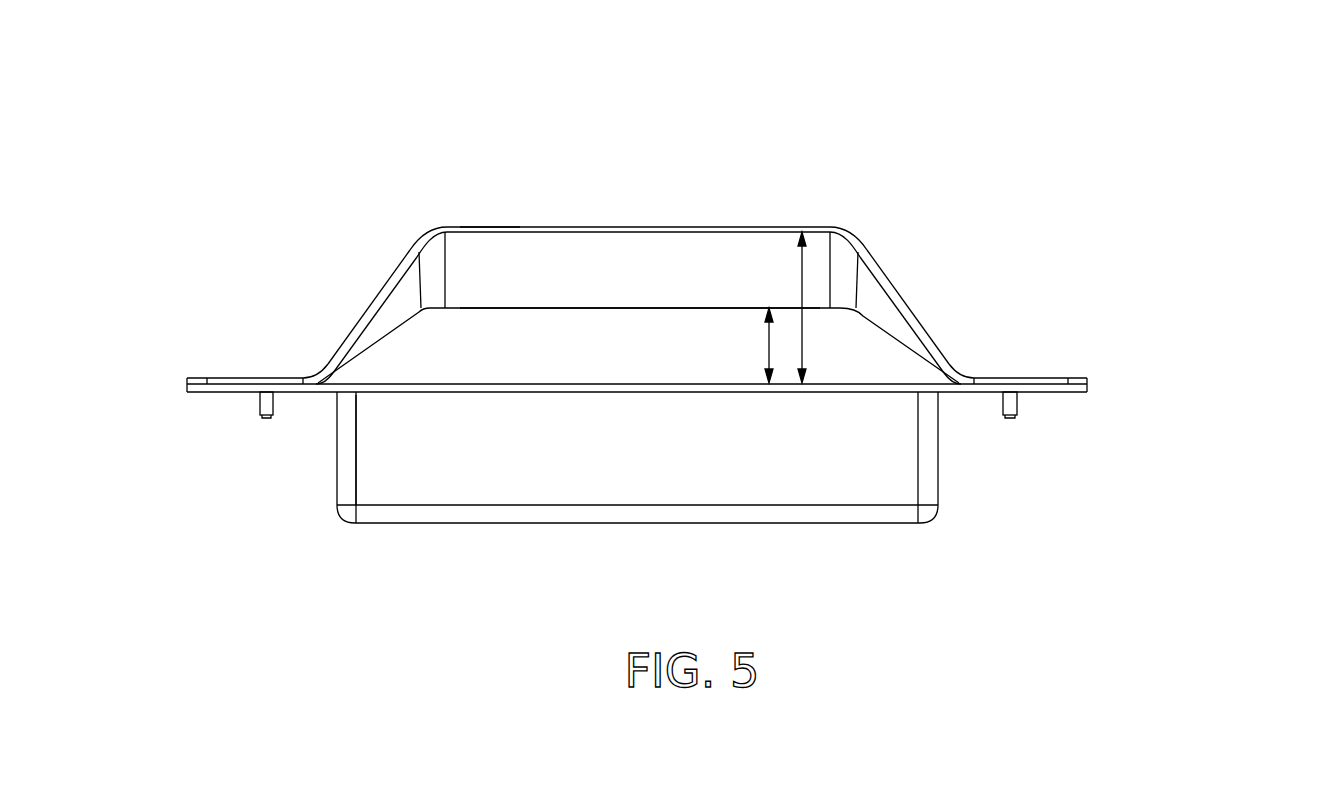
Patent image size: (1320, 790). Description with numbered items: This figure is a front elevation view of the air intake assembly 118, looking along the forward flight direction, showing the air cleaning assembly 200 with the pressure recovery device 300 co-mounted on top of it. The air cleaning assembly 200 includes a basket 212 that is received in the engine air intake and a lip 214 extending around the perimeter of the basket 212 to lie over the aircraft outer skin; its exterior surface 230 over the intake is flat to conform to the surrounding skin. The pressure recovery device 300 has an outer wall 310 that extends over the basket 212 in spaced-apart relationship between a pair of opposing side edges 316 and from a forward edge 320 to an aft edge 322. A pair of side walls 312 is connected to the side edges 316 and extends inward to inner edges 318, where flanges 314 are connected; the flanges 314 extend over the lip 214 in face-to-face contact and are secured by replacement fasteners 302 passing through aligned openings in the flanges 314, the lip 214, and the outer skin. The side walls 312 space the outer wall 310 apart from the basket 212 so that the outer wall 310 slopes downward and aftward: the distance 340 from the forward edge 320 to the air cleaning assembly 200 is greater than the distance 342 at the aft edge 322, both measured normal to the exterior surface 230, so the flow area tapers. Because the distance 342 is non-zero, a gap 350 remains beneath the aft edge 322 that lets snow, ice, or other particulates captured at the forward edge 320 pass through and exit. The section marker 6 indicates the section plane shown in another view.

The air intake assembly 118 is at (276, 145).
The air cleaning assembly 200 is at (1168, 383).
The basket 212 is at (940, 493).
The lip 214 is at (220, 392).
The exterior surface 230 is at (648, 383).
The pressure recovery device 300 is at (1168, 223).
The replacement fasteners 302 is at (268, 418).
The outer wall 310 is at (623, 227).
The side walls 312 is at (372, 300).
The flanges 314 is at (222, 377).
The side edges 316 is at (432, 227).
The inner edge 318 is at (318, 373).
The forward edge 320 is at (488, 227).
The aft edge 322 is at (475, 308).
The distance 340 is at (803, 290).
The distance 342 is at (768, 345).
The gap 350 is at (510, 342).
The section line 6- 6 is at (648, 265).